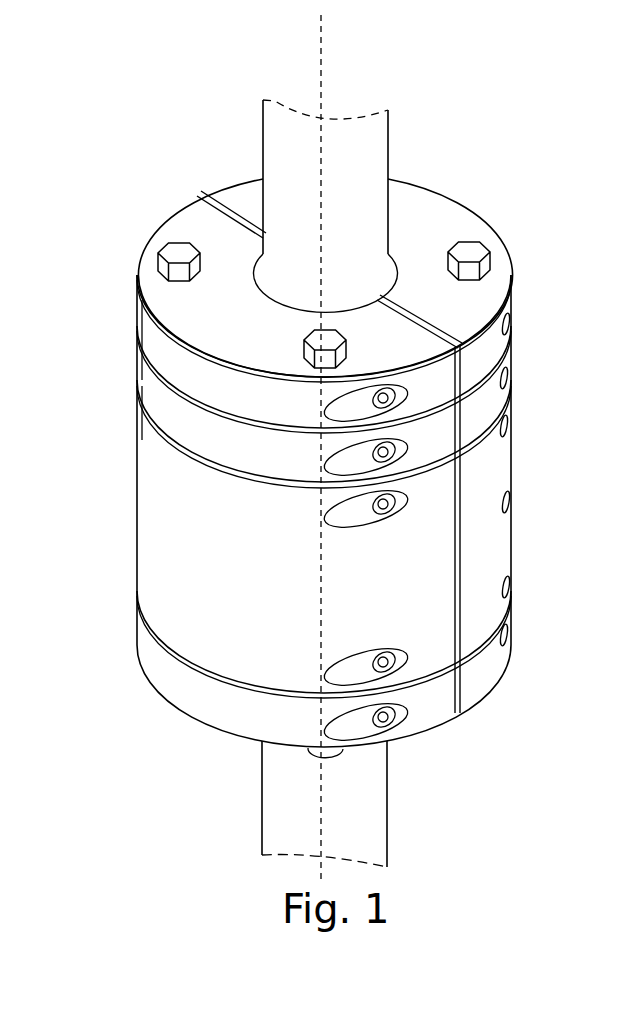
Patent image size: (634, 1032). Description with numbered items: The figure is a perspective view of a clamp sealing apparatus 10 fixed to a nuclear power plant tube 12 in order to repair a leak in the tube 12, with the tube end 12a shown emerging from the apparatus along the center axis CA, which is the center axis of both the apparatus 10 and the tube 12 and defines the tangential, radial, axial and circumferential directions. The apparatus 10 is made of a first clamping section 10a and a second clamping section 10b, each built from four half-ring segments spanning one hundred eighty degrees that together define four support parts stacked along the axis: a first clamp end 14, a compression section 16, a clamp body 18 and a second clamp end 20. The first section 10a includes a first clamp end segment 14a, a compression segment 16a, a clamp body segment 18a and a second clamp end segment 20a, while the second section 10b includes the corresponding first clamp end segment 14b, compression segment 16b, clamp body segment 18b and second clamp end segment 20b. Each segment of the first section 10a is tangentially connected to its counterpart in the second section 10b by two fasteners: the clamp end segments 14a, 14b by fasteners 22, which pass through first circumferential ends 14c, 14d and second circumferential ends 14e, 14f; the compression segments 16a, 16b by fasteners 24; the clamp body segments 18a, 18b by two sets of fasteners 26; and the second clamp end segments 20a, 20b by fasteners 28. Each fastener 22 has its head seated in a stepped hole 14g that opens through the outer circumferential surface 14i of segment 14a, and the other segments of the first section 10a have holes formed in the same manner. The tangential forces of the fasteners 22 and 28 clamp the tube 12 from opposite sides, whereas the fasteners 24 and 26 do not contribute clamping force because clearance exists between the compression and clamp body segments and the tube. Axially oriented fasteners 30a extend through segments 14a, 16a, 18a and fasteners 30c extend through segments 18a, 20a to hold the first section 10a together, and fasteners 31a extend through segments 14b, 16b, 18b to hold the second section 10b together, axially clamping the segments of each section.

The clamp sealing apparatus 10 is at (324, 473).
The first clamping section 10a is at (128, 268).
The second clamping section 10b is at (482, 196).
The nuclear power plant tube 12 is at (399, 133).
The shaft end 12a is at (326, 160).
The first clamp end 14 is at (347, 396).
The first clamp end segment 14a is at (187, 224).
The first clamp end segment 14b is at (431, 218).
The first circumferential end 14c is at (407, 326).
The first circumferential end 14d is at (405, 340).
The second circumferential end 14e is at (240, 228).
The second circumferential end 14f is at (224, 213).
The hole 14g is at (336, 398).
The outer circumferential surface 14i is at (215, 378).
The compression section 16 is at (303, 400).
The compression segment 16a is at (160, 402).
The compression segment 16b is at (480, 406).
The clamp body 18 is at (307, 530).
The clamp body segment 18a is at (131, 510).
The clamp body segment 18b is at (512, 412).
The second clamp end 20 is at (303, 729).
The second clamp end segment 20a is at (168, 680).
The second clamp end segment 20b is at (474, 665).
The fasteners 22 is at (397, 388).
The fasteners 24 is at (405, 449).
The fasteners 26 is at (365, 508).
The fasteners 28 is at (405, 713).
The fasteners 30a is at (162, 238).
The fasteners 30c is at (337, 763).
The fasteners 31a is at (492, 240).
The center axis CA is at (318, 58).